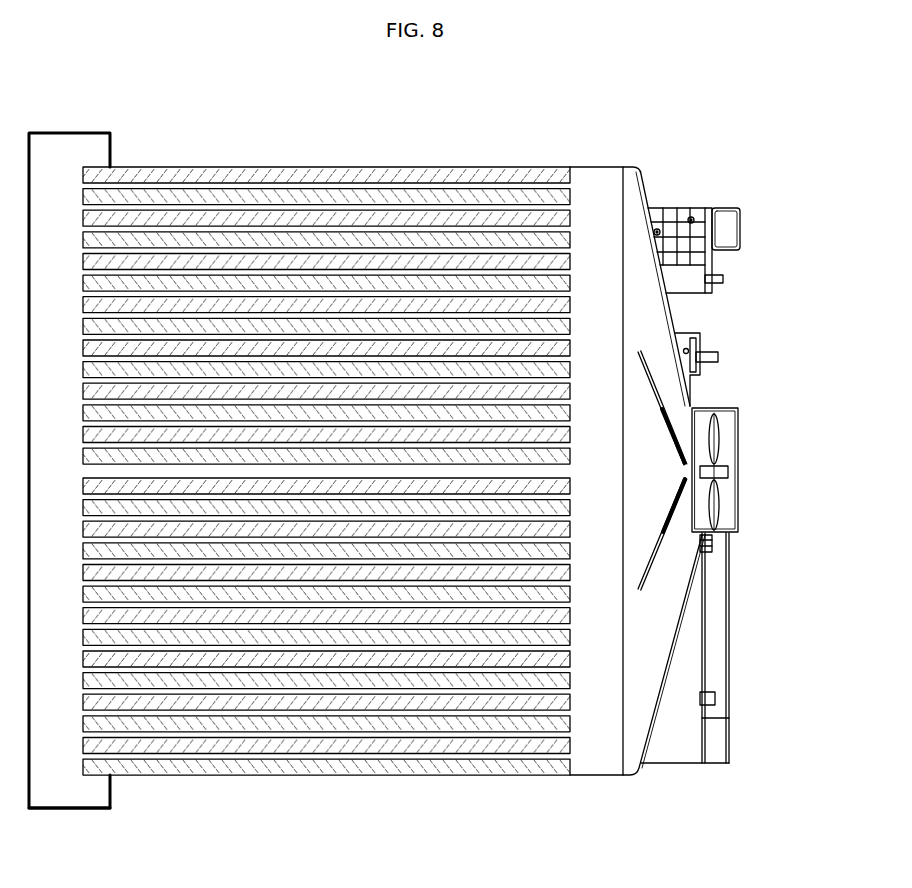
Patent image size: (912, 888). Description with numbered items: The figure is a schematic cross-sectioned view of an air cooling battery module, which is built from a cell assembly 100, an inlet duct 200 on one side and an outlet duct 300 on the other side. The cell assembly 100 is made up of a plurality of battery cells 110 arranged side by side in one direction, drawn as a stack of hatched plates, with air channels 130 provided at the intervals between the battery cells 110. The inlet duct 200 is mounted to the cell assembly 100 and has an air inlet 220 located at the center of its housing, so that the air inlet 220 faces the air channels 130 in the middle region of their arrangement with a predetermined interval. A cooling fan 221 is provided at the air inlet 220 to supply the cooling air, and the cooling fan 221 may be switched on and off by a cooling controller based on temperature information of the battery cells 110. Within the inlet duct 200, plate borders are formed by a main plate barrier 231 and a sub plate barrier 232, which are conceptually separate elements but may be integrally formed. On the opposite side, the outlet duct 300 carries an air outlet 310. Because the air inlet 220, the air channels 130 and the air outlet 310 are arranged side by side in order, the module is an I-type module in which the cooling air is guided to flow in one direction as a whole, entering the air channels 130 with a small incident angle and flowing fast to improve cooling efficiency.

The cell assembly 100 is at (326, 425).
The battery cells 110 is at (270, 196).
The air channels 130 is at (398, 186).
The inlet duct 200 is at (672, 186).
The air inlet 220 is at (741, 490).
The cooling fan 221 is at (716, 436).
The main plate barrier 231 is at (675, 438).
The sub plate barrier 232 is at (658, 388).
The outlet duct 300 is at (87, 131).
The air outlet 310 is at (58, 790).